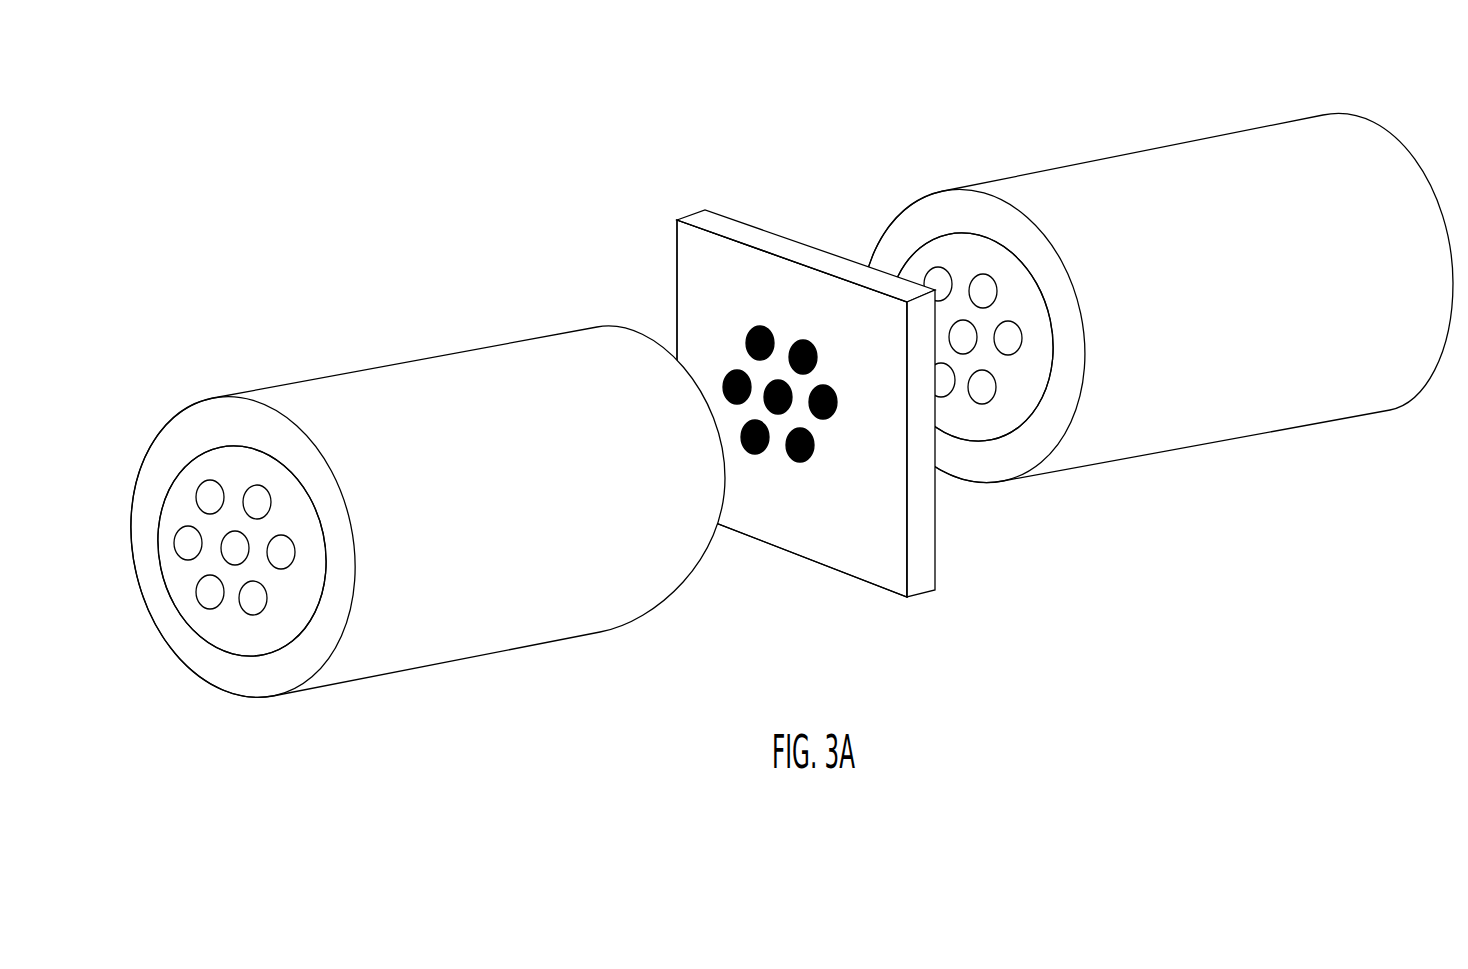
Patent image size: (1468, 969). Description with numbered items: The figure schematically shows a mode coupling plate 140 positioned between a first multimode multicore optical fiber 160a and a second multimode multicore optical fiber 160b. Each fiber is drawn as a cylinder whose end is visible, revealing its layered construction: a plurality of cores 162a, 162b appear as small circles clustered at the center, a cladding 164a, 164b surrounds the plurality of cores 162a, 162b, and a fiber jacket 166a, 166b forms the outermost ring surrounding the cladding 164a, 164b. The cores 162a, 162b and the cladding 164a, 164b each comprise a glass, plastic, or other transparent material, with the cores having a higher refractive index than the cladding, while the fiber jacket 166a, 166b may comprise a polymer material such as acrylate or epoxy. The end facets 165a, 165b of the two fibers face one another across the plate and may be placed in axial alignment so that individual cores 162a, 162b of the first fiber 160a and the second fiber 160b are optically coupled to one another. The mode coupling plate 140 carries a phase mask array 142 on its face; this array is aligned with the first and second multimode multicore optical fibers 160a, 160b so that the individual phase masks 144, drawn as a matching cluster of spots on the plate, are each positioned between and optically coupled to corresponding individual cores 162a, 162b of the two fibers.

The mode coupling plate 140 is at (725, 228).
The phase mask array 142 is at (787, 473).
The phase masks 144 is at (832, 382).
The first multimode multicore optical fiber 160a is at (365, 340).
The second multimode multicore optical fiber 160b is at (1135, 122).
The cores 162a is at (168, 557).
The cores 162b is at (973, 262).
The cladding 164a is at (208, 620).
The cladding 164b is at (1038, 400).
The end facet 165a is at (712, 552).
The end facet 165b is at (1008, 412).
The fiber jacket 166a is at (218, 688).
The fiber jacket 166b is at (932, 190).